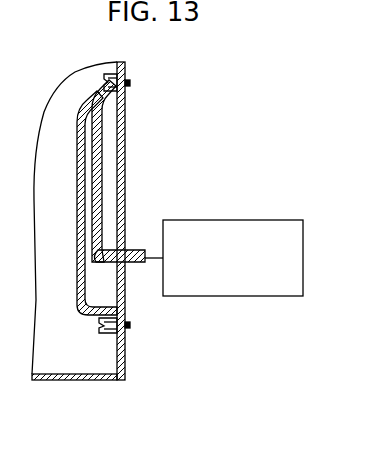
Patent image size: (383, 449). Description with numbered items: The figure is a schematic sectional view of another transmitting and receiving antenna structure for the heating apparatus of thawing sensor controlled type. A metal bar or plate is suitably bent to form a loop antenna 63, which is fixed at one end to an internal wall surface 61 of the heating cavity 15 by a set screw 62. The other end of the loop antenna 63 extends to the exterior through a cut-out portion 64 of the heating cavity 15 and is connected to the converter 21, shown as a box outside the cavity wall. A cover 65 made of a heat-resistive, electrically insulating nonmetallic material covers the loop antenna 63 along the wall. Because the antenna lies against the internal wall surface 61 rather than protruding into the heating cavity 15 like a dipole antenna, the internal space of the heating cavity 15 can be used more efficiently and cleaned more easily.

The heating cavity 15 is at (50, 98).
The converter 21 is at (226, 220).
The internal wall surface 61 is at (125, 152).
The set screw 62 is at (101, 84).
The loop antenna 63 is at (96, 257).
The cut-out portion 64 is at (125, 262).
The cover 65 is at (85, 274).